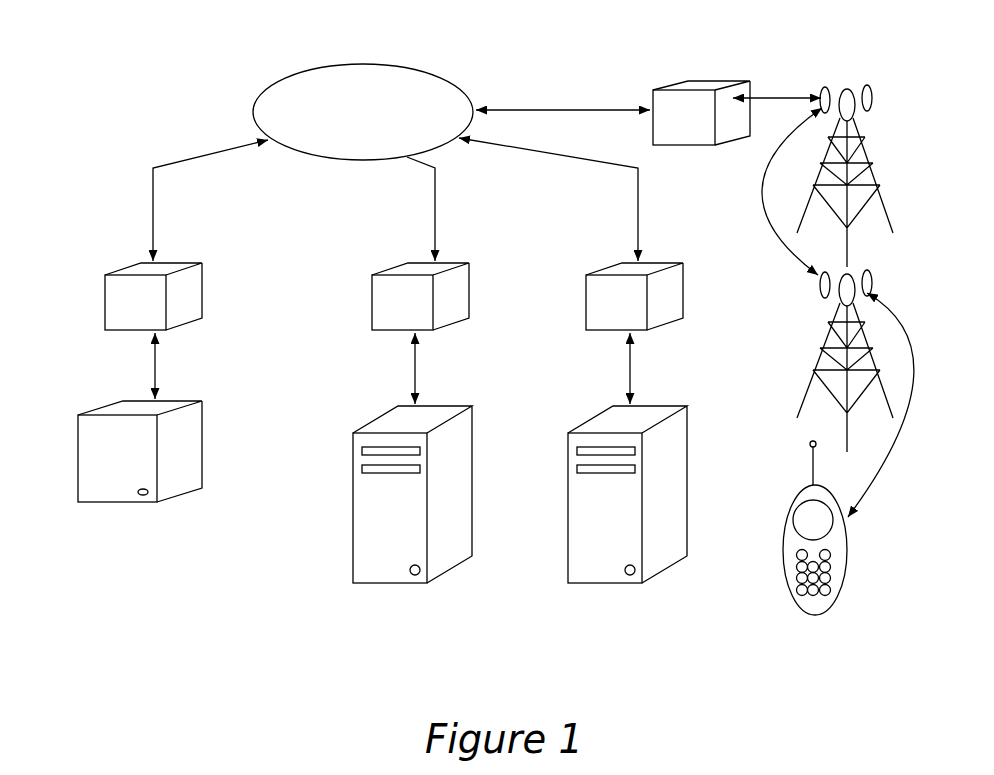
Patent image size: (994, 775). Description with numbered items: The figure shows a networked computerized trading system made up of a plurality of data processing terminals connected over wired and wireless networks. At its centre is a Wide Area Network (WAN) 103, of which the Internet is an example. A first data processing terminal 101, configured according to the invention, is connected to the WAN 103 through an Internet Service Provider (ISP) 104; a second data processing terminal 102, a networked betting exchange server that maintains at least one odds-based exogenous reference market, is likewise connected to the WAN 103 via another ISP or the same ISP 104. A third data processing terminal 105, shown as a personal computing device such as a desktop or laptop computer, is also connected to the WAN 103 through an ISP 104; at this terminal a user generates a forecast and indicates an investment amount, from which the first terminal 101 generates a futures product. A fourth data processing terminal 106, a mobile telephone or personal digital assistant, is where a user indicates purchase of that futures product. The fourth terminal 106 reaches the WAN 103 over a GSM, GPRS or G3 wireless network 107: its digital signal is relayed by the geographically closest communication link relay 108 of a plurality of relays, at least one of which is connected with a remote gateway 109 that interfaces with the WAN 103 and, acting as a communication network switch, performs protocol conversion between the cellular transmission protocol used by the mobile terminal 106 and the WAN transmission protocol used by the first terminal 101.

The first data processing terminal 101 is at (383, 485).
The second data processing terminal 102 is at (87, 462).
The Wide Area Network (WAN) 103 is at (348, 152).
The Internet Service Provider (ISP) 104 is at (104, 305).
The third data processing terminal 105 is at (597, 485).
The fourth data processing terminal 106 is at (796, 503).
The wireless network 107 is at (812, 97).
The communication link relay 108 is at (871, 89).
The remote gateway 109 is at (683, 82).